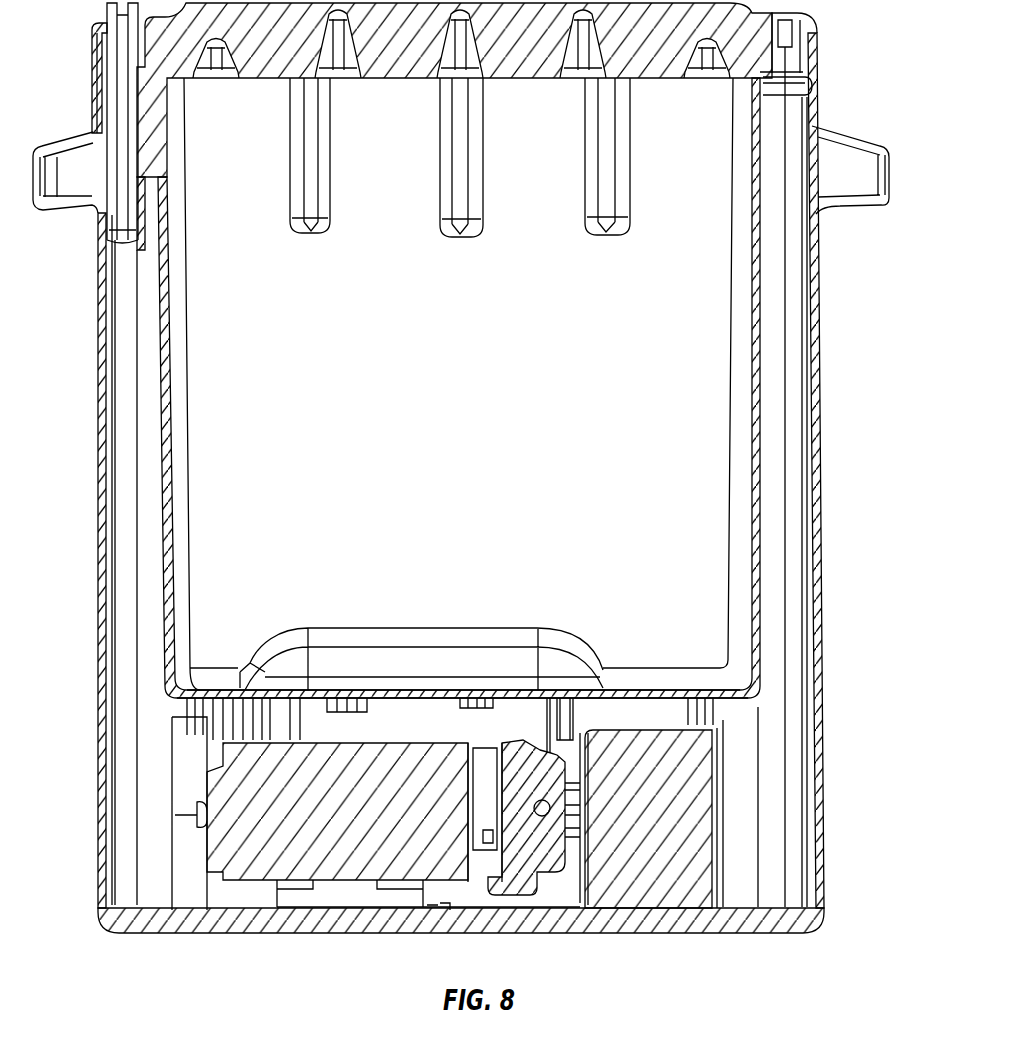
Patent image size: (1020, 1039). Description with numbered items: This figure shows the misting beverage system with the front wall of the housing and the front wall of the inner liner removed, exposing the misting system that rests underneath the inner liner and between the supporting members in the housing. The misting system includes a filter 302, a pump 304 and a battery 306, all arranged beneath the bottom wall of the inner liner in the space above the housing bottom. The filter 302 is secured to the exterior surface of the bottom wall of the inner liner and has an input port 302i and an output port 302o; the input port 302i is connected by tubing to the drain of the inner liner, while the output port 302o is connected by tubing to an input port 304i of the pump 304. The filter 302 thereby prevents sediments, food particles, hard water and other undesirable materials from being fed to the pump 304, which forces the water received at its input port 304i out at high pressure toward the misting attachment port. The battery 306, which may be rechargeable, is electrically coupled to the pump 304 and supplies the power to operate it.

The filter 302 is at (596, 699).
The input port 302i is at (283, 708).
The output port 302o is at (560, 720).
The pump 304 is at (240, 847).
The input port 304i is at (578, 793).
The battery 306 is at (637, 883).